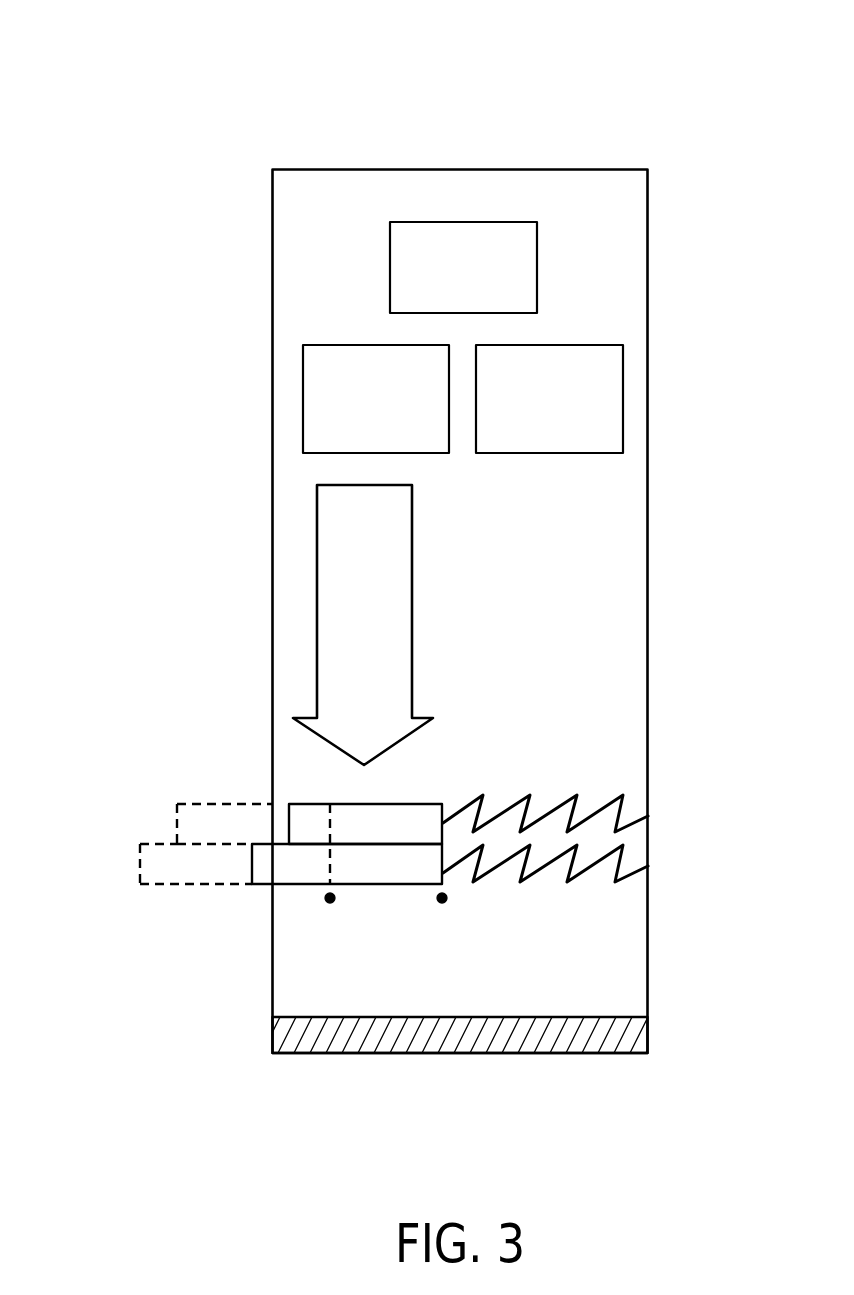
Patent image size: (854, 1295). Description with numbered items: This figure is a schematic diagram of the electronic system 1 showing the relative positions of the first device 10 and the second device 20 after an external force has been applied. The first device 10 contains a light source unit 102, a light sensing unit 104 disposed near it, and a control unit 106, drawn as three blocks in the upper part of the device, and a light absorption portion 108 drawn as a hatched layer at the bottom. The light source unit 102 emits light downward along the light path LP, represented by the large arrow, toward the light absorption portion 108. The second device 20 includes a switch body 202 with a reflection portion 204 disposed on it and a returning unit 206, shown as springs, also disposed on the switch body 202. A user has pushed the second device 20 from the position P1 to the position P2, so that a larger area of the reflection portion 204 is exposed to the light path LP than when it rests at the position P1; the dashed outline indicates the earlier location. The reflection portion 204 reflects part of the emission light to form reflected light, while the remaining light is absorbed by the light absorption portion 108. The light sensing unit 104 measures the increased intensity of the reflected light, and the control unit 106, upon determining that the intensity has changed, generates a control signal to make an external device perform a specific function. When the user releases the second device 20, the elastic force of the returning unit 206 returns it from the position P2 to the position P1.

The electronic system 1 is at (666, 90).
The first device 10 is at (648, 242).
The second device 20 is at (239, 850).
The light source unit 102 is at (368, 345).
The light sensing unit 104 is at (557, 345).
The control unit 106 is at (507, 221).
The light absorption portion 108 is at (630, 1037).
The switch body 202 is at (266, 872).
The reflection portion 204 is at (310, 810).
The returning unit 206 is at (640, 820).
The light path LP is at (333, 600).
The position P1 is at (330, 920).
The position P2 is at (441, 920).